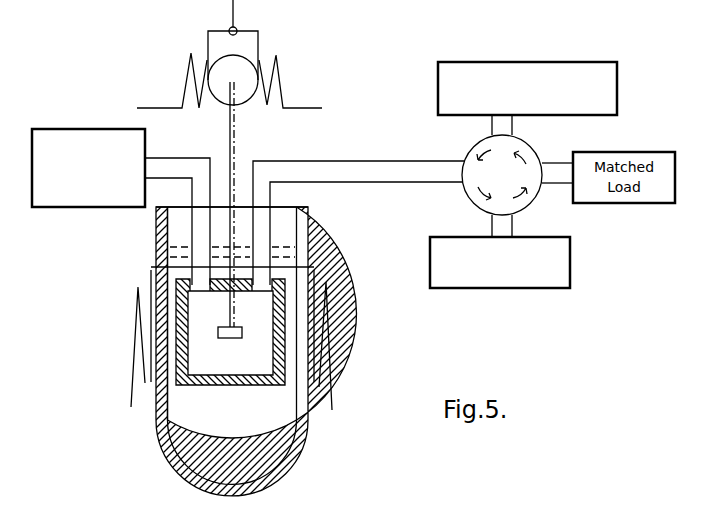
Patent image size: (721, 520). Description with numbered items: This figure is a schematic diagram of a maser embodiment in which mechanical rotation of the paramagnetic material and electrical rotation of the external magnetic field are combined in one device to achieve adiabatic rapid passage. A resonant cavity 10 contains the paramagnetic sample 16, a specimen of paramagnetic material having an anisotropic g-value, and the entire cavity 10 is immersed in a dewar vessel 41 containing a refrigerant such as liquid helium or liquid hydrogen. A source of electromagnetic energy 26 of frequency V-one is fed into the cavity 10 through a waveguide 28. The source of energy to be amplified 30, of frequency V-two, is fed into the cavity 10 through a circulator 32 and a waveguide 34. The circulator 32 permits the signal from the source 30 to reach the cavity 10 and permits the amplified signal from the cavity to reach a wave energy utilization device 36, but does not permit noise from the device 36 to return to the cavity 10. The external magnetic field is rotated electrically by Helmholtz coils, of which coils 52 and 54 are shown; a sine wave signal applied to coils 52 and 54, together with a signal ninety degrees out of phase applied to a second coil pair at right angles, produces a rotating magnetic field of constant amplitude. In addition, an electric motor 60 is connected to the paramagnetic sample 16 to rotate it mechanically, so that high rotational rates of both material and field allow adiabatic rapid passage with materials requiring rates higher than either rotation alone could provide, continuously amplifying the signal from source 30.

The resonant cavity 10 is at (240, 386).
The paramagnetic sample 16 is at (241, 327).
The source of electromagnetic energy 26 is at (108, 128).
The waveguide 28 is at (206, 157).
The source of energy to be amplified 30 is at (617, 90).
The circulator 32 is at (536, 154).
The waveguide 34 is at (311, 162).
The wave energy utilization device 36 is at (552, 238).
The dewar vessel 41 is at (265, 478).
The Helmholtz coil 52 is at (137, 290).
The Helmholtz coil 54 is at (330, 292).
The electric motor 60 is at (252, 62).